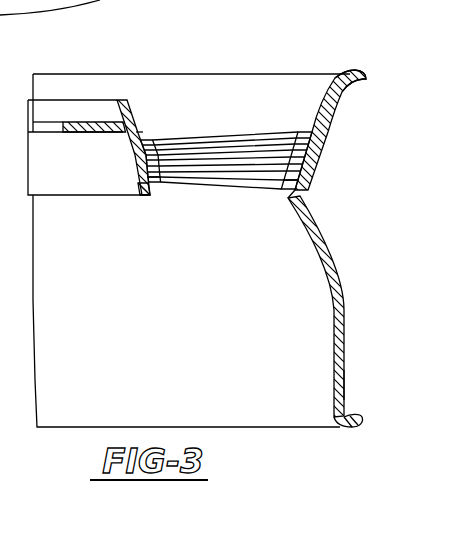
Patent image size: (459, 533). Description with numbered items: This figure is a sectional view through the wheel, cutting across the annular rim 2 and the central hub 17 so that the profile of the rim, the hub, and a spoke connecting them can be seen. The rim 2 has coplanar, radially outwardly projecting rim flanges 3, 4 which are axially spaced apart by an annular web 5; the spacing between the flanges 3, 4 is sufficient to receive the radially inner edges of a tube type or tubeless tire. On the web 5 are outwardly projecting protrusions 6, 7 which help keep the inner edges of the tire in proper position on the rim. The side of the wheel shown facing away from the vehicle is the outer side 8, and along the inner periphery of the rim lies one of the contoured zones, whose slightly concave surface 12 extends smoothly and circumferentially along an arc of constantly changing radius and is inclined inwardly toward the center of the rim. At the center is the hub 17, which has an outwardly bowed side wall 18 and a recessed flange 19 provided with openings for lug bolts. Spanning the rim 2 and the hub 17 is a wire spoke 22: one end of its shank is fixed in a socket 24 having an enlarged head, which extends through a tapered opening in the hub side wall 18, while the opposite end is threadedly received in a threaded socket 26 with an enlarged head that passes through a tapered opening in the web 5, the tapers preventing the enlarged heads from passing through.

The annular rim 2 is at (300, 75).
The rim flange 3 is at (366, 80).
The rim flange 4 is at (363, 421).
The annular web 5 is at (341, 297).
The protrusion 6 is at (352, 82).
The protrusion 7 is at (345, 383).
The outer side 8 is at (361, 76).
The concave surface 12 is at (318, 108).
The hub 17 is at (147, 85).
The side wall 18 is at (137, 128).
The recessed flange 19 is at (95, 133).
The wire spoke 22 is at (229, 172).
The socket 24 is at (162, 182).
The threaded socket 26 is at (254, 264).